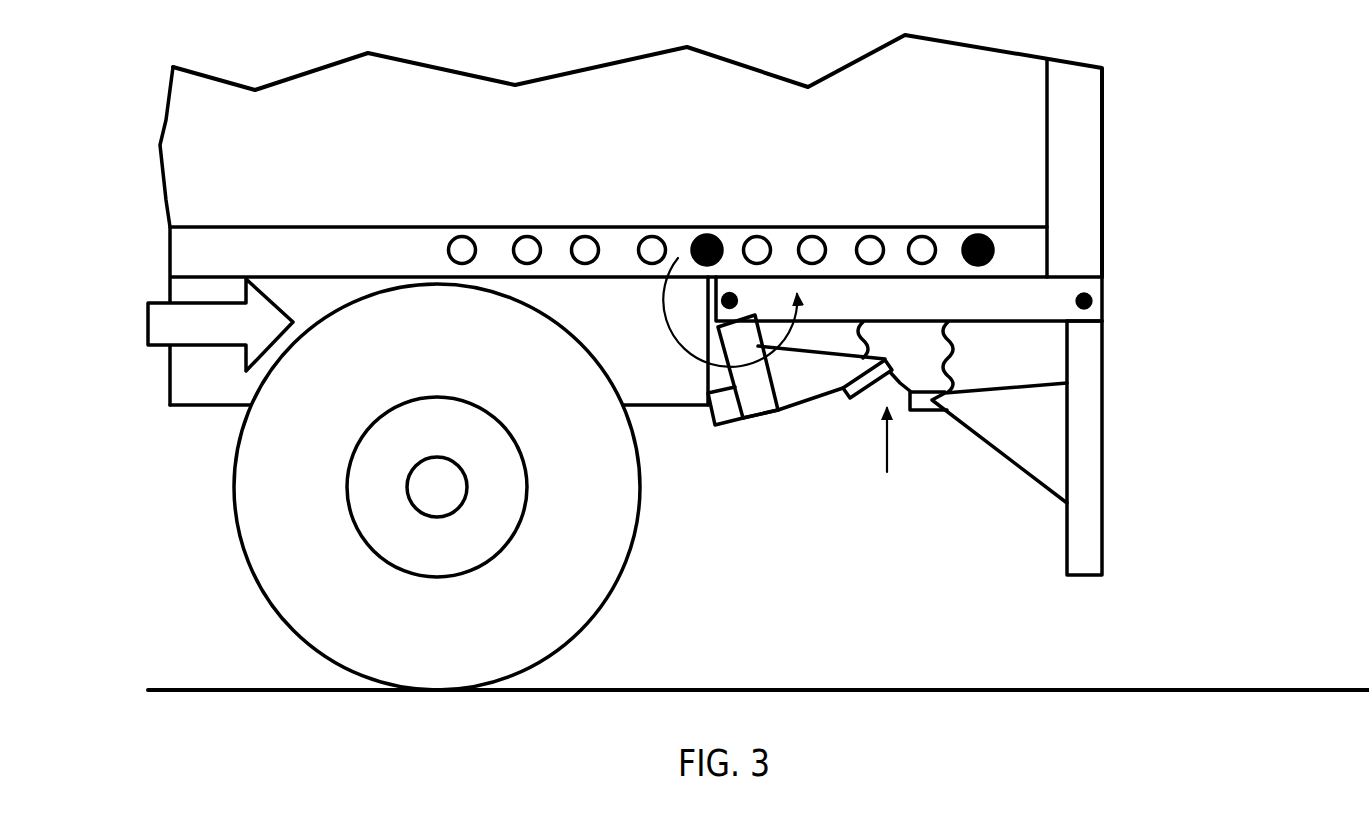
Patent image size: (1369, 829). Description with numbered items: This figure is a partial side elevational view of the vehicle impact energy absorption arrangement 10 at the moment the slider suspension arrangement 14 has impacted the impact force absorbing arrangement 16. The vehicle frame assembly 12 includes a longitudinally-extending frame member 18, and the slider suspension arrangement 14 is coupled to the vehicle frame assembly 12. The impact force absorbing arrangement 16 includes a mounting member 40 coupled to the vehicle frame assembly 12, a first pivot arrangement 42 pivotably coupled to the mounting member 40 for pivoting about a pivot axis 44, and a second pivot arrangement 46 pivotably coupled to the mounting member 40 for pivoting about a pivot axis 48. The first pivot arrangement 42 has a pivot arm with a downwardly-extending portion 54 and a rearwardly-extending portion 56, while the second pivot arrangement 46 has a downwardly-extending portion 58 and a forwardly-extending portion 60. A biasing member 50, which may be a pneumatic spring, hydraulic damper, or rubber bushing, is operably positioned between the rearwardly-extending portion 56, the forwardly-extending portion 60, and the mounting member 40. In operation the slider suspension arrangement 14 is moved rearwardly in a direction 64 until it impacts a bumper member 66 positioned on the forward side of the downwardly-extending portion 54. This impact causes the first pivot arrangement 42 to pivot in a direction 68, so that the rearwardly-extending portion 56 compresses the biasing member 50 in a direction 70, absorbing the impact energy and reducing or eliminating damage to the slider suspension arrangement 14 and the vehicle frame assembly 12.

The vehicle impact energy absorption arrangement 10 is at (733, 548).
The vehicle frame assembly 12 is at (488, 221).
The slider suspension arrangement 14 is at (665, 414).
The impact force absorbing arrangement 16 is at (1107, 298).
The frame member 18 is at (377, 243).
The mounting member 40 is at (1107, 316).
The first pivot arrangement 42 is at (795, 431).
The pivot axis 44 is at (729, 292).
The second pivot arrangement 46 is at (1051, 426).
The pivot axis 48 is at (1103, 290).
The biasing member 50 is at (961, 358).
The downwardly-extending portion 54 is at (758, 404).
The rearwardly-extending portion 56 is at (822, 384).
The downwardly-extending portion 58 is at (1096, 456).
The forwardly-extending portion 60 is at (1020, 447).
The direction 64 is at (172, 322).
The bumper member 66 is at (718, 428).
The direction 68 is at (675, 346).
The direction 70 is at (888, 444).